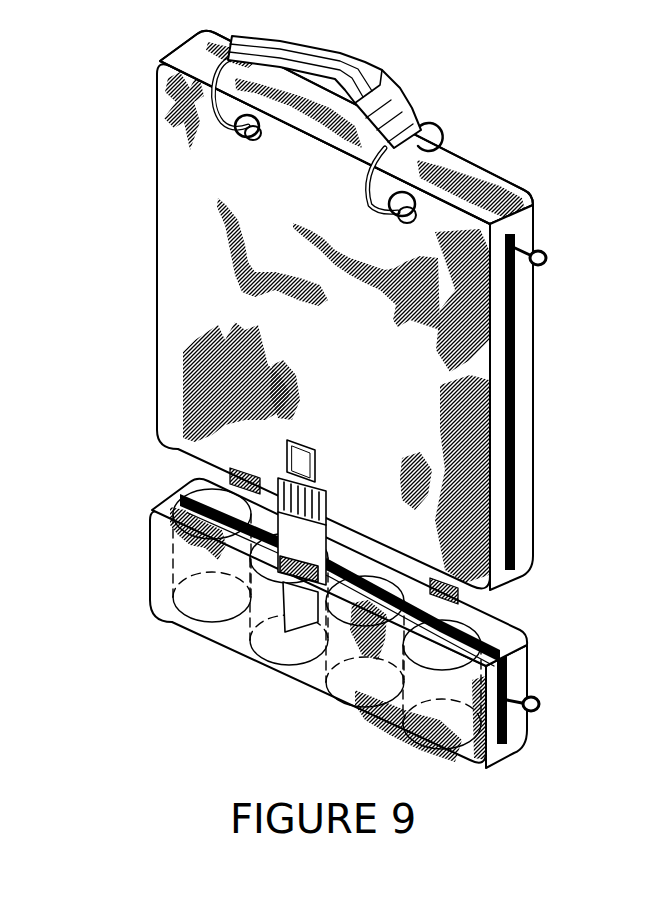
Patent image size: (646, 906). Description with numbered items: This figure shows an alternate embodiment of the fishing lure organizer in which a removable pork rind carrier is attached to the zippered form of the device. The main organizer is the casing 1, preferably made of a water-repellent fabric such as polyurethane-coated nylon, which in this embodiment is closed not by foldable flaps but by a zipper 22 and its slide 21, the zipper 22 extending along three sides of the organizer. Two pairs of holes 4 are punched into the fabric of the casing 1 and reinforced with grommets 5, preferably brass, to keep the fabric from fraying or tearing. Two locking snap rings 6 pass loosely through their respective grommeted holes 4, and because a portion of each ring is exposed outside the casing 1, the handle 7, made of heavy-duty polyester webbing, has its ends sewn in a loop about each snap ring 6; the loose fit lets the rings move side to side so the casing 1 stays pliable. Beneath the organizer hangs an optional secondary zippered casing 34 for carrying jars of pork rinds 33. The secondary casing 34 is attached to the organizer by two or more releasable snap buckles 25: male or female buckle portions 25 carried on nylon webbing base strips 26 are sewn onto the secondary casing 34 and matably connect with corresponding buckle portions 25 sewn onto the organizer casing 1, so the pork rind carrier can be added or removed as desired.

The casing 1 is at (136, 206).
The holes 4 is at (490, 189).
The grommets 5 is at (490, 189).
The snap rings 6 is at (437, 127).
The handle 7 is at (368, 67).
The slide 21 is at (533, 250).
The zipper 22 is at (513, 307).
The snap buckles 25 is at (275, 550).
The nylon webbing base strips 26 is at (318, 458).
The pork rind jars 33 is at (308, 665).
The secondary zippered casing 34 is at (132, 518).